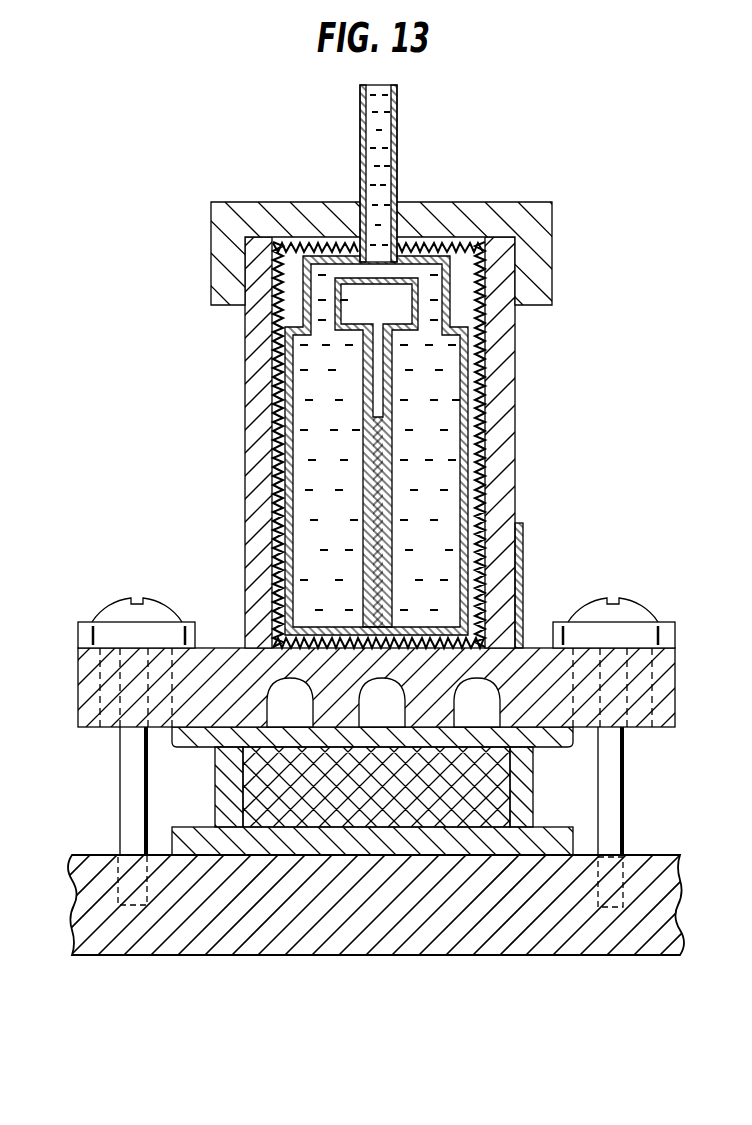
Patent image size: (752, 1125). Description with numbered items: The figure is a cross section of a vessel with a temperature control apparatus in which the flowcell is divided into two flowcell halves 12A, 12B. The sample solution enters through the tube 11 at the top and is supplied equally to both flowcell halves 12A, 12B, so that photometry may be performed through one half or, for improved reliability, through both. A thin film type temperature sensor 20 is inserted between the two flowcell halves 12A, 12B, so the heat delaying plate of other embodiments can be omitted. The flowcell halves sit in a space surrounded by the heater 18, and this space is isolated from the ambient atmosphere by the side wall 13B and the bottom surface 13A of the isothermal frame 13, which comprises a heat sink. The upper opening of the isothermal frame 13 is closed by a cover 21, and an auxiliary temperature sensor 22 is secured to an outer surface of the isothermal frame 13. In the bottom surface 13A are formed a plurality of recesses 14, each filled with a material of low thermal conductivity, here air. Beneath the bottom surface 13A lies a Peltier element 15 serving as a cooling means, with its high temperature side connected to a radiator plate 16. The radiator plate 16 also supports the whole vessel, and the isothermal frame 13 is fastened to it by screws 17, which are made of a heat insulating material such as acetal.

The tube 11 is at (397, 148).
The cover 21 is at (528, 202).
The isothermal frame 13 is at (376, 442).
The side wall 13B is at (248, 437).
The bottom surface 13A is at (207, 712).
The heater 18 is at (272, 494).
The flowcell half 12B is at (300, 398).
The flowcell half 12A is at (452, 503).
The temperature sensor 20 is at (378, 455).
The auxiliary temperature sensor 22 is at (523, 582).
The recesses 14 is at (503, 683).
The screws 17 is at (120, 788).
The Peltier element 15 is at (490, 795).
The radiator plate 16 is at (408, 925).